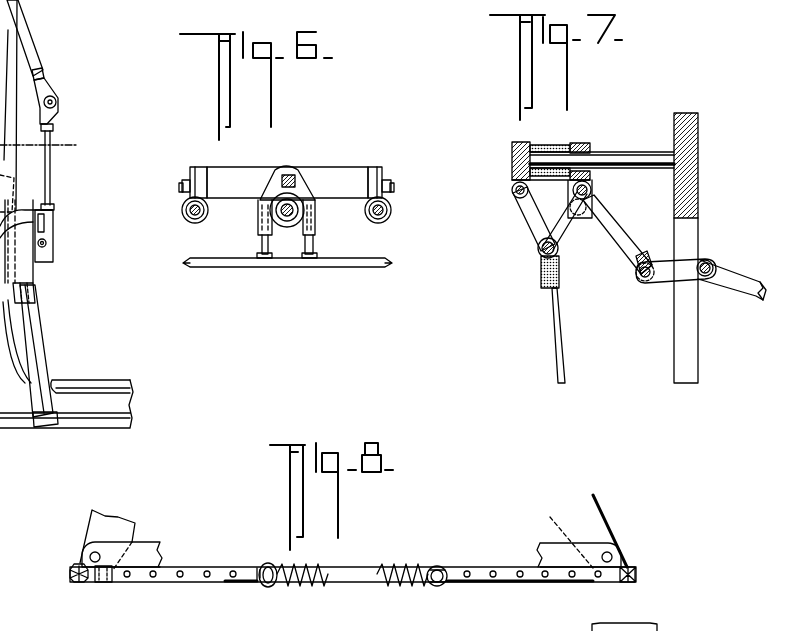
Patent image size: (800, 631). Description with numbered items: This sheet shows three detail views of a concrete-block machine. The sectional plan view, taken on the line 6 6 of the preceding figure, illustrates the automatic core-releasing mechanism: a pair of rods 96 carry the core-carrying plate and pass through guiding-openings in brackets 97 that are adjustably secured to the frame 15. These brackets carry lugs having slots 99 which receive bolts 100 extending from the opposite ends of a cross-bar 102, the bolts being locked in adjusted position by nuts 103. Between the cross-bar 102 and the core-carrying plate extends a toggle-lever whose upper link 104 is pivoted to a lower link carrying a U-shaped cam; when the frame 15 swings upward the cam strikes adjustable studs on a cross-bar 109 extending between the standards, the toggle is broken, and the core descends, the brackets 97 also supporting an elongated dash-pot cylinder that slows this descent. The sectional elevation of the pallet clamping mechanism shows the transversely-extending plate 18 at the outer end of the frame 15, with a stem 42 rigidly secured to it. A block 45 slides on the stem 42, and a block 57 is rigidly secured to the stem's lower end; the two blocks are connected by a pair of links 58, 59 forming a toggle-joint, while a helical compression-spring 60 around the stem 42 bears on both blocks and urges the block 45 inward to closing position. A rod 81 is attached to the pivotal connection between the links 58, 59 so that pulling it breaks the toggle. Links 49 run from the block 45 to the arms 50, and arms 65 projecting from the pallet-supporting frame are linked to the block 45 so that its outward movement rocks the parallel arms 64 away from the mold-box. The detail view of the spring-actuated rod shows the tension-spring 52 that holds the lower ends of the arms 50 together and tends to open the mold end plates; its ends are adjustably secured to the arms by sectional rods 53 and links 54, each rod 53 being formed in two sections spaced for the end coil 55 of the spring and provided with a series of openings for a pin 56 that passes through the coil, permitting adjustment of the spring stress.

In FIG. 6, the section line 6 is at (43, 145).
In FIG. 7, the frame 15 is at (692, 238).
In FIG. 7, the transversely-extending plate 18 is at (698, 178).
In FIG. 7, the stem 42 is at (614, 157).
In FIG. 7, the block 45 is at (581, 143).
In FIG. 7, the links 49 is at (624, 236).
In FIG. 8, the links 49 is at (140, 545).
In FIG. 8, the arms 50 is at (95, 526).
In FIG. 8, the tension-spring 52 is at (352, 575).
In FIG. 8, the sectional rods 53 is at (505, 578).
In FIG. 8, the links 54 is at (80, 583).
In FIG. 8, the end coil 55 is at (268, 563).
In FIG. 8, the pin 56 is at (260, 567).
In FIG. 7, the block 57 is at (512, 156).
In FIG. 7, the link 58 is at (530, 210).
In FIG. 7, the link 59 is at (565, 226).
In FIG. 7, the helical compression-spring 60 is at (550, 145).
In FIG. 7, the arms 64 is at (735, 284).
In FIG. 7, the arms 65 is at (668, 278).
In FIG. 7, the rod 81 is at (553, 318).
In FIG. 6, the rods 96 is at (186, 212).
In FIG. 6, the brackets 97 is at (194, 212).
In FIG. 6, the slots 99 is at (46, 243).
In FIG. 6, the bolts 100 is at (182, 185).
In FIG. 6, the cross-bar 102 is at (327, 170).
In FIG. 6, the nuts 103 is at (180, 191).
In FIG. 6, the link 104 is at (28, 22).
In FIG. 6, the cross-bar 109 is at (248, 263).